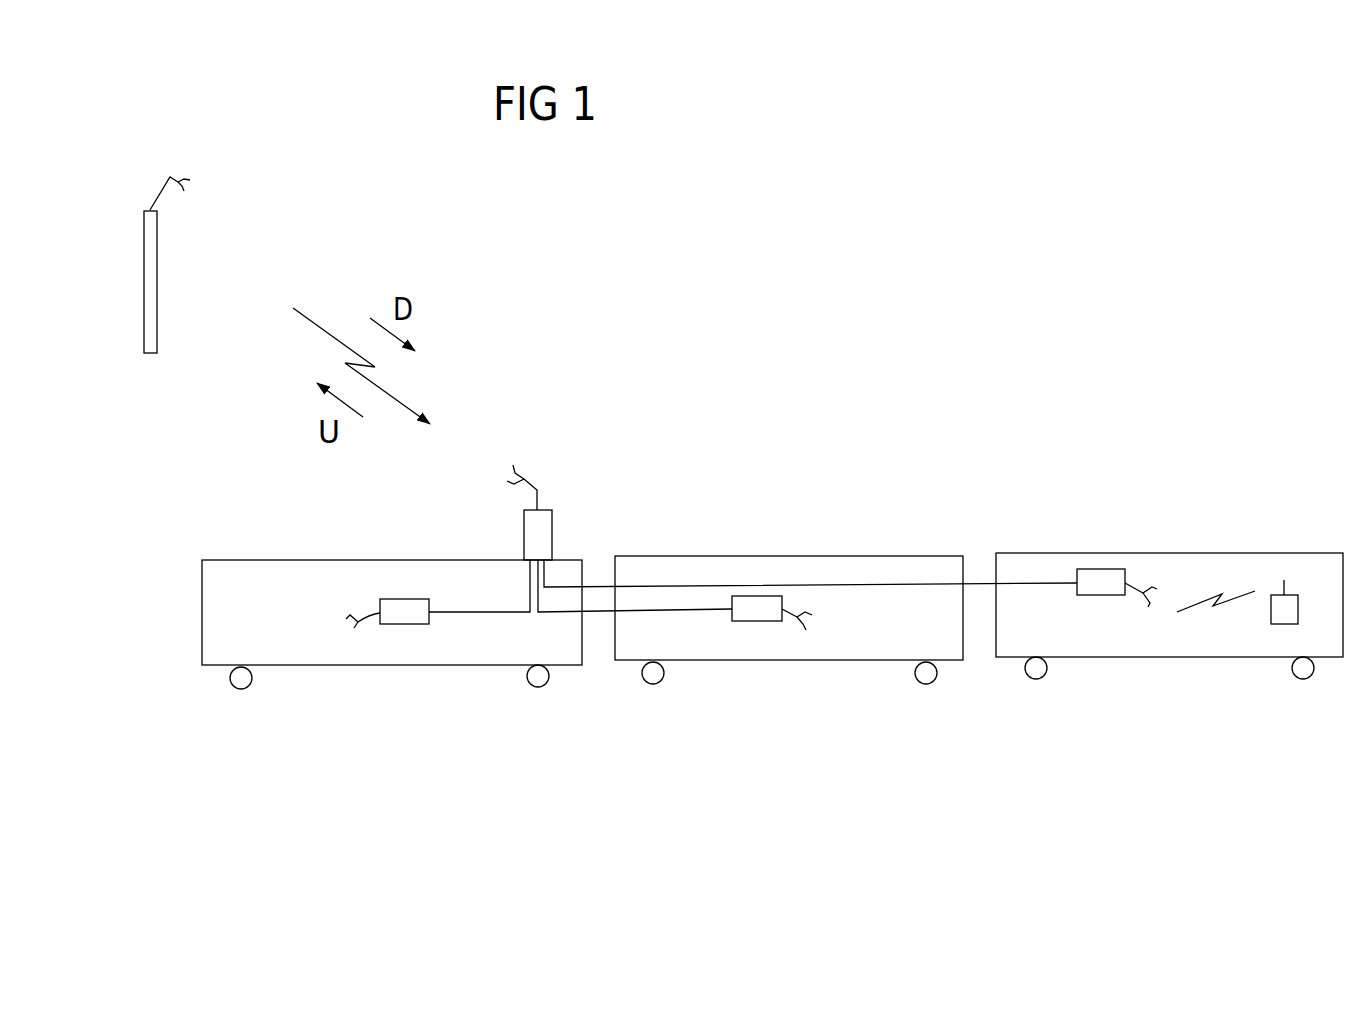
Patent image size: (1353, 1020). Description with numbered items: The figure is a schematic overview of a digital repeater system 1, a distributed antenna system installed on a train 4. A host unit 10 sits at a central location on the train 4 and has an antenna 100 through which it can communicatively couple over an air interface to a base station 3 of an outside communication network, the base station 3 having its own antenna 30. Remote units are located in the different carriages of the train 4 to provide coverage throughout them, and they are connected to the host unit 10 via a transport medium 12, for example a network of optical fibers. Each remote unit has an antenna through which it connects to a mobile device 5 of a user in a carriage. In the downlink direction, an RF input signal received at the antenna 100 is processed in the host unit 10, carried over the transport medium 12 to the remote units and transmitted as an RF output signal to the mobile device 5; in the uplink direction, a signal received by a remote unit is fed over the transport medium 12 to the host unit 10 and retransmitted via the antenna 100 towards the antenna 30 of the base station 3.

The digital repeater system 1 is at (488, 702).
The base station 3 is at (140, 284).
The antenna of base station 30 is at (190, 180).
The train 4 is at (175, 623).
The host unit 10 is at (538, 535).
The antenna of host unit 100 is at (530, 485).
The transport medium 12 is at (565, 577).
The mobile device 5 is at (1287, 612).